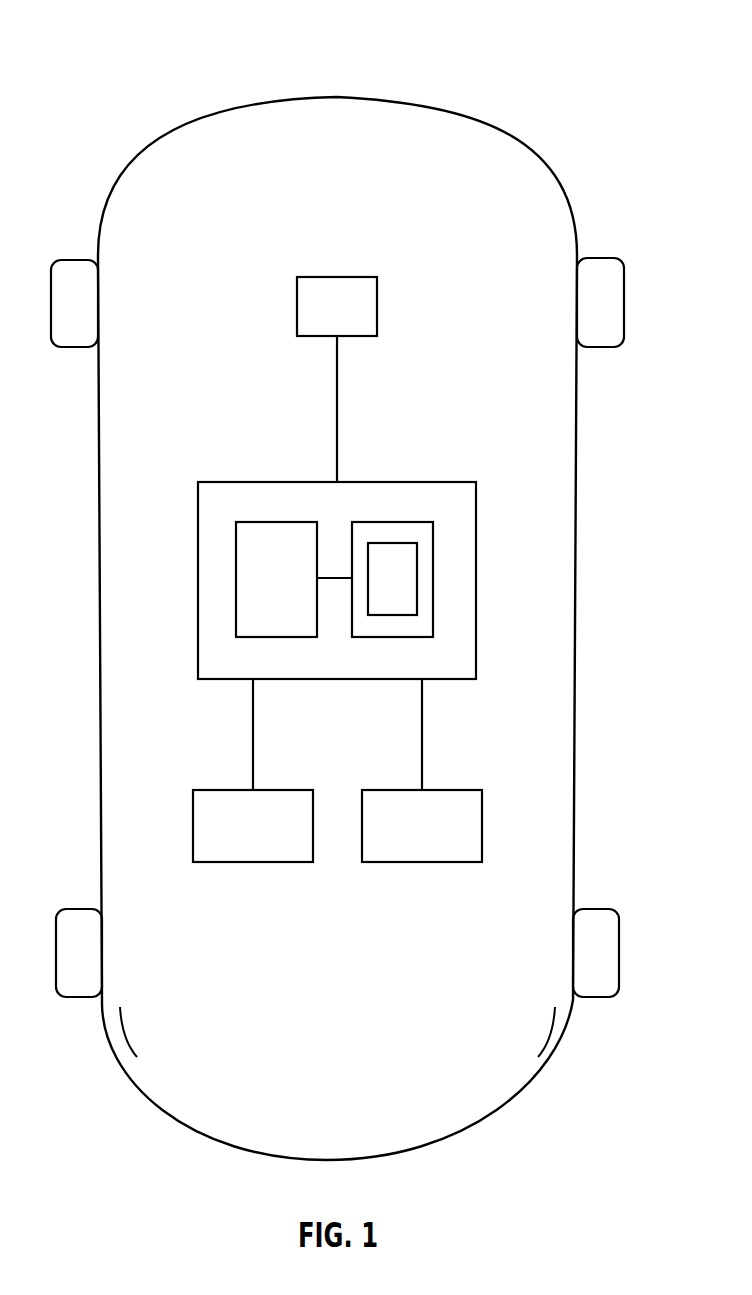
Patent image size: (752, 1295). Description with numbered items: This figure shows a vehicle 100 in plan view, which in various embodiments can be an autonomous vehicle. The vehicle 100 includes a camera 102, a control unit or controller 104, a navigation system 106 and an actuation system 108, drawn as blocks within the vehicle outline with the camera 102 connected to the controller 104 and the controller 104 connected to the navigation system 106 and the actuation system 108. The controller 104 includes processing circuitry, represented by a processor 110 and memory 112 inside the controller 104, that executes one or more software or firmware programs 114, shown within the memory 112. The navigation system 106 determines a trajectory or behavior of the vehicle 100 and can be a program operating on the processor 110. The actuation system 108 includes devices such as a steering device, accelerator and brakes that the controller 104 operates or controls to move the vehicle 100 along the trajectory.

The vehicle 100 is at (597, 46).
The camera 102 is at (297, 305).
The controller 104 is at (420, 481).
The navigation system 106 is at (193, 825).
The actuation system 108 is at (482, 825).
The processor 110 is at (236, 578).
The memory 112 is at (433, 605).
The programs 114 is at (417, 588).